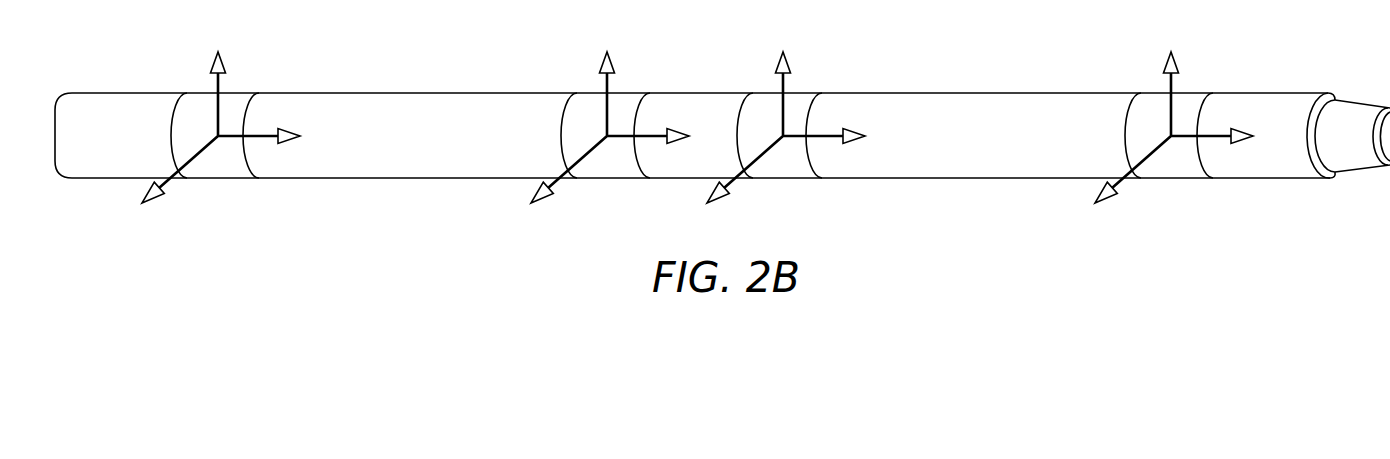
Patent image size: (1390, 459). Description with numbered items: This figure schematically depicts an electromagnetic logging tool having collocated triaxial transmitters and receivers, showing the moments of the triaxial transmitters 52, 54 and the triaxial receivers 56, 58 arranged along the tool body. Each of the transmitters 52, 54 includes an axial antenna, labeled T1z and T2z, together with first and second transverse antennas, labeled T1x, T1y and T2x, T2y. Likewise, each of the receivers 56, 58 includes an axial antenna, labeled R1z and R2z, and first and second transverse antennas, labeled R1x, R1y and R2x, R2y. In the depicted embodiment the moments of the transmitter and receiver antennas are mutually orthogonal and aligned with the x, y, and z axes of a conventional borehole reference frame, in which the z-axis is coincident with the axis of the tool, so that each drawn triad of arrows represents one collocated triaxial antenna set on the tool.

The triaxial transmitter 52 is at (185, 121).
The triaxial transmitter 54 is at (1138, 121).
The triaxial receiver 56 is at (575, 121).
The triaxial receiver 58 is at (748, 121).